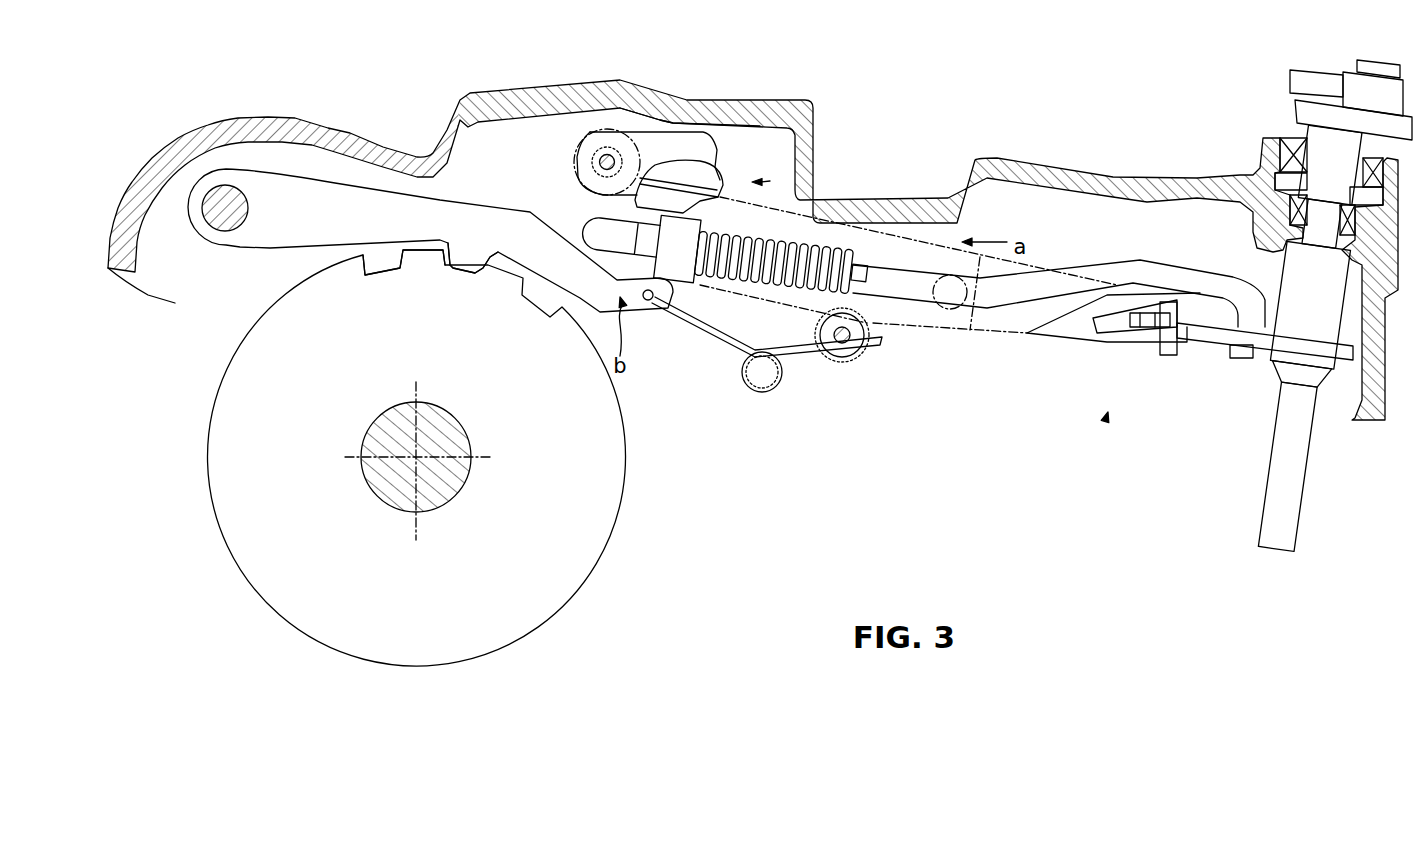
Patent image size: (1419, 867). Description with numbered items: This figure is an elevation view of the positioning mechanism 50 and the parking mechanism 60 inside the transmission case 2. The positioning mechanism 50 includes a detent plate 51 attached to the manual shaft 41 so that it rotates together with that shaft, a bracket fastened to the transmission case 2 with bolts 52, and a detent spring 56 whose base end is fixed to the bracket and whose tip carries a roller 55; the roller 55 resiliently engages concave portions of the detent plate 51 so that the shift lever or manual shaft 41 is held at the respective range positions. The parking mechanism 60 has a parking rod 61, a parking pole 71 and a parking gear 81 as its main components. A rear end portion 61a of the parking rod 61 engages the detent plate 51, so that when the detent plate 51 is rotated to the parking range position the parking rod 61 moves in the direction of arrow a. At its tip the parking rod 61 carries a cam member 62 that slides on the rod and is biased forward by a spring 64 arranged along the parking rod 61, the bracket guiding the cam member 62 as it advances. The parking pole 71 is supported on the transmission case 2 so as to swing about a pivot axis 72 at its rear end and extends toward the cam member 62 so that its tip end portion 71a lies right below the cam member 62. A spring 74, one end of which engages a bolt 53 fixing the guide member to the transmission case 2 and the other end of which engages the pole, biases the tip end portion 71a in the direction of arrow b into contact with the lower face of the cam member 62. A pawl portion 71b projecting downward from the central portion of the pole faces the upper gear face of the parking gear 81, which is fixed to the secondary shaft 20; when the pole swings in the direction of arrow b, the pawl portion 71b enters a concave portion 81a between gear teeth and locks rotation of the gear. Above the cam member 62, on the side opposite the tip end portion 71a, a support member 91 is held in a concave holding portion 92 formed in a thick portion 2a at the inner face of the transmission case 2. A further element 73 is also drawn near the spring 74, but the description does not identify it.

The transmission case 2 is at (512, 107).
The thick portion 2a is at (656, 130).
The secondary shaft 20 is at (465, 483).
The manual shaft 41 is at (1290, 495).
The positioning mechanism 50 is at (1108, 422).
The detent plate 51 is at (1203, 340).
The bolts 52 is at (599, 160).
The bolt 53 is at (832, 333).
The roller 55 is at (1165, 352).
The detent spring 56 is at (1071, 343).
The parking mechanism 60 is at (770, 175).
The parking rod 61 is at (1097, 262).
The rear end portion 61a is at (1240, 360).
The cam member 62 is at (680, 284).
The spring 64 is at (832, 250).
The parking pole 71 is at (478, 220).
The tip end portion 71a is at (650, 310).
The pawl portion 71b is at (467, 273).
The pivot axis 72 is at (229, 230).
The roller 73 is at (758, 380).
The spring 74 is at (713, 340).
The parking gear 81 is at (616, 500).
The concave portion 81a is at (460, 276).
The support member 91 is at (770, 181).
The concave holding portion 92 is at (698, 160).